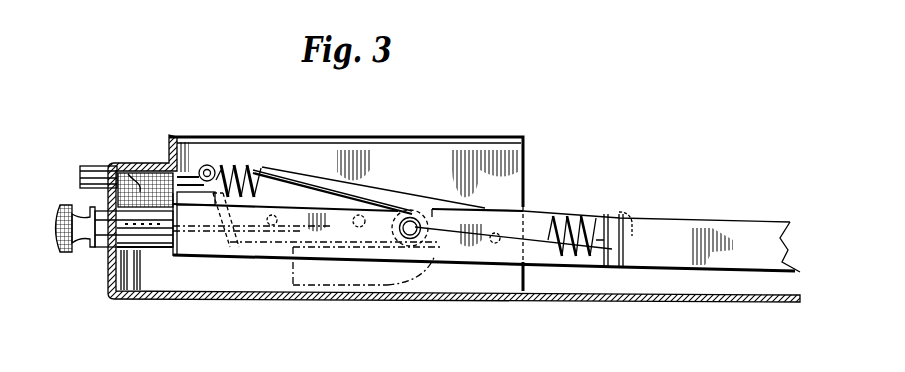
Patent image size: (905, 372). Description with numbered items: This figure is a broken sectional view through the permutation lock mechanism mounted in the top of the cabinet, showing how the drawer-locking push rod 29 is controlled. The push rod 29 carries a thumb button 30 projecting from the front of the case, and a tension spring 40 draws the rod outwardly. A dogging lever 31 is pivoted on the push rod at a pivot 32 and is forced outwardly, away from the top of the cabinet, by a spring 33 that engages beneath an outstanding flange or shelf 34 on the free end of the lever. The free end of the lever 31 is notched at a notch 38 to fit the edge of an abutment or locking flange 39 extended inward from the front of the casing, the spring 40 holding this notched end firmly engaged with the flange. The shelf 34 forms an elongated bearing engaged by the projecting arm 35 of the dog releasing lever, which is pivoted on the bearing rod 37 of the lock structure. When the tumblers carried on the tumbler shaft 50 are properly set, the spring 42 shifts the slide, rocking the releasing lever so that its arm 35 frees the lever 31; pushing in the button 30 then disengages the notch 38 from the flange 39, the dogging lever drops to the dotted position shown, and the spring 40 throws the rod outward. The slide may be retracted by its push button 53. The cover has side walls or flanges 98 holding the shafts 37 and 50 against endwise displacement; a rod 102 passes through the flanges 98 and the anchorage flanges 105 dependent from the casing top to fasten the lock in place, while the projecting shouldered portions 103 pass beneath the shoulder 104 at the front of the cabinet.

The push rod 29 is at (708, 230).
The thumb button 30 is at (60, 240).
The dogging lever 31 is at (292, 190).
The pivot 32 is at (413, 233).
The spring 33 is at (401, 287).
The outstanding flange or shelf 34 is at (255, 225).
The projecting arm 35 is at (218, 212).
The bearing rod 37 is at (279, 216).
The notch 38 is at (228, 168).
The abutment or locking flange 39 is at (208, 165).
The tension spring 40 is at (250, 170).
The spring 42 is at (405, 137).
The tumbler shaft 50 is at (365, 216).
The push button 53 is at (82, 173).
The side walls or flanges 98 is at (422, 175).
The rod 102 is at (499, 244).
The projecting shouldered portions 103 is at (138, 186).
The shoulder 104 is at (157, 176).
The anchorage flanges 105 is at (505, 208).